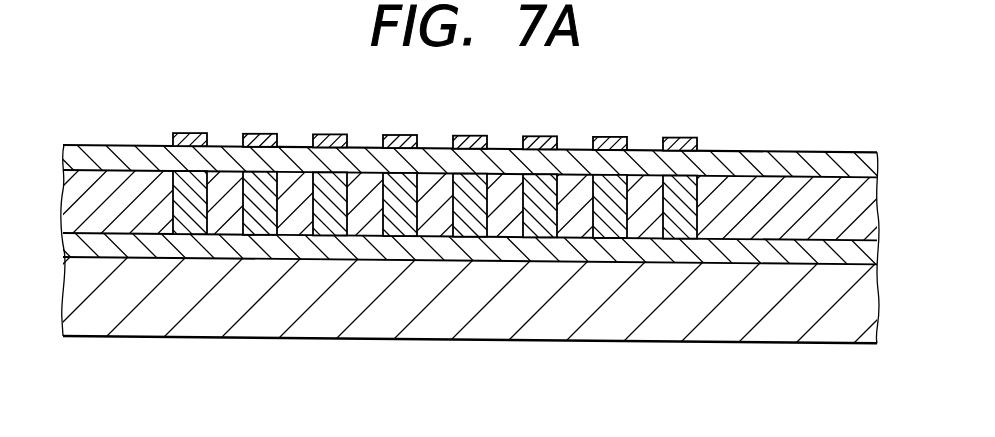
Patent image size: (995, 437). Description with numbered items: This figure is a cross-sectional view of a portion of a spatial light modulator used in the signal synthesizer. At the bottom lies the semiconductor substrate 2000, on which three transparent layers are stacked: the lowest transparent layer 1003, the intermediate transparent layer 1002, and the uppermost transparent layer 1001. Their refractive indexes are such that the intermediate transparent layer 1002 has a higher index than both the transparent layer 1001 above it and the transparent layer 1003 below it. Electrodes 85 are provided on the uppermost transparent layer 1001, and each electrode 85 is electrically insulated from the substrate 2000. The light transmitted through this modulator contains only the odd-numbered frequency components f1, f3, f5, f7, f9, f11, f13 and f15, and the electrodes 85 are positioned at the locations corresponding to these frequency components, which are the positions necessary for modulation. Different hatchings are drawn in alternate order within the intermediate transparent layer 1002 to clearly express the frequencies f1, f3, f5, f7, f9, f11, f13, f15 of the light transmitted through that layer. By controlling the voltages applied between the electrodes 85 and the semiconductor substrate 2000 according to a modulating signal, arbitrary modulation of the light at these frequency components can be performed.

The electrode 85 is at (435, 146).
The transparent layer 1001 is at (783, 161).
The intermediate transparent layer 1002 is at (758, 232).
The transparent layer 1003 is at (602, 255).
The semiconductor substrate 2000 is at (333, 320).
The frequency component f1 is at (190, 168).
The frequency component f3 is at (260, 168).
The frequency component f5 is at (330, 168).
The frequency component f7 is at (400, 169).
The frequency component f9 is at (470, 169).
The frequency component f11 is at (540, 169).
The frequency component f13 is at (610, 170).
The frequency component f15 is at (680, 170).